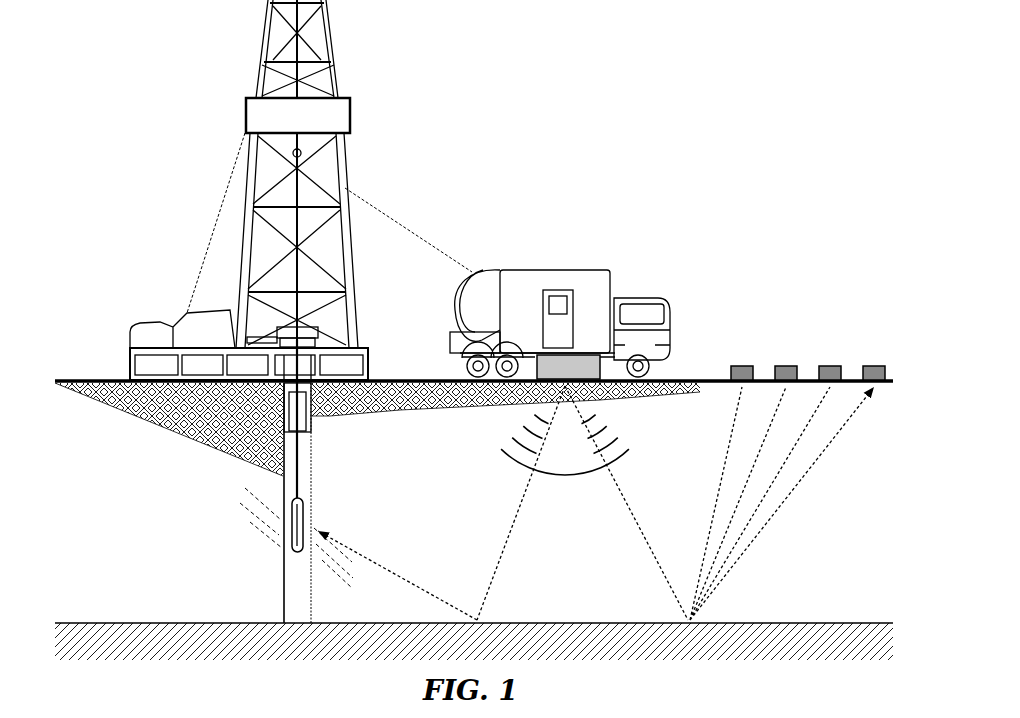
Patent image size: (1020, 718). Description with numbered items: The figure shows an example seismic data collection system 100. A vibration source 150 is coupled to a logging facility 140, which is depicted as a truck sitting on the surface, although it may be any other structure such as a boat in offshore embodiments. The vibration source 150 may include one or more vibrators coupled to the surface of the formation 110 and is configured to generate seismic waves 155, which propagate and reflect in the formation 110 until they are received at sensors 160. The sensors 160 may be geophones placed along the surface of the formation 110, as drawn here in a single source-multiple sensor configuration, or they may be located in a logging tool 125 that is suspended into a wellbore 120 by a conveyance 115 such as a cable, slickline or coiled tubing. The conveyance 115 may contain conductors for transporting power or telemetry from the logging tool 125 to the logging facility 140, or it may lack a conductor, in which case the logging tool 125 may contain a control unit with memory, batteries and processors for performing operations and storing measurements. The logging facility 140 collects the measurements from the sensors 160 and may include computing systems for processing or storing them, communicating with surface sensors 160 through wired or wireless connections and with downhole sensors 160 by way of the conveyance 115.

The seismic data collection system 100 is at (470, 120).
The formation 110 is at (474, 521).
The conveyance 115 is at (312, 430).
The wellbore 120 is at (312, 462).
The logging tool 125 is at (285, 527).
The logging facility 140 is at (555, 268).
The vibration source 150 is at (568, 367).
The seismic waves 155 is at (503, 503).
The sensors 160 is at (893, 356).